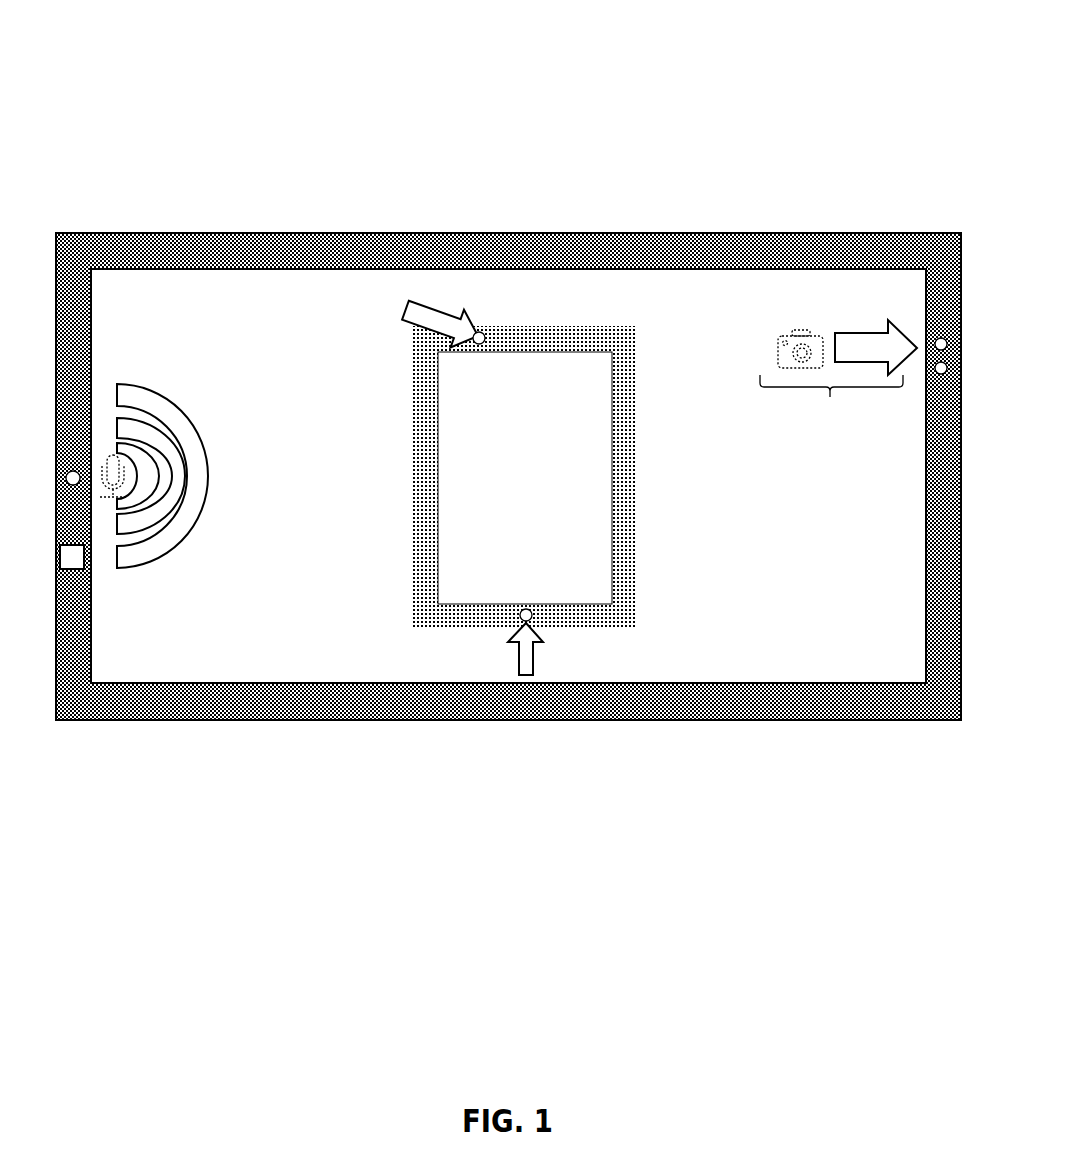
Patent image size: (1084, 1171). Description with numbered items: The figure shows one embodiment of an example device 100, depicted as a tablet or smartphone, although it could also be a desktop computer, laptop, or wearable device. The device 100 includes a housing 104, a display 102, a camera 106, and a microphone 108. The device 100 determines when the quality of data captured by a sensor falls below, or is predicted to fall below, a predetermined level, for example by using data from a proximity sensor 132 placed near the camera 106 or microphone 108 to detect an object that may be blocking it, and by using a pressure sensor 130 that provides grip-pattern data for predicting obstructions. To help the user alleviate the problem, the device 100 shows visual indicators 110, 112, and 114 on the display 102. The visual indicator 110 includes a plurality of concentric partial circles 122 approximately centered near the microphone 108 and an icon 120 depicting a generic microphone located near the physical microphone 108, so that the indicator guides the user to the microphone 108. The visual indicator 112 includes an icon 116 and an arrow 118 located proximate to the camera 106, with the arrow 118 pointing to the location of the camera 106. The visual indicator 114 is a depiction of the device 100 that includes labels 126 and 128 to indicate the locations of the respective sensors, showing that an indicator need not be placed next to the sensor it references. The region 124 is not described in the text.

The device 100 is at (240, 28).
The display 102 is at (808, 648).
The housing 104 is at (415, 232).
The camera 106 is at (940, 338).
The microphone 108 is at (76, 483).
The visual indicator 110 is at (207, 361).
The visual indicator 112 is at (832, 398).
The visual indicator 114 is at (437, 640).
The icon 116 is at (800, 325).
The arrow 118 is at (867, 333).
The icon 120 is at (113, 455).
The concentric partial circles 122 is at (186, 537).
The display bezel 124 is at (420, 453).
The label 126 is at (360, 294).
The label 128 is at (588, 675).
The pressure sensor 130 is at (67, 569).
The proximity sensor 132 is at (938, 374).